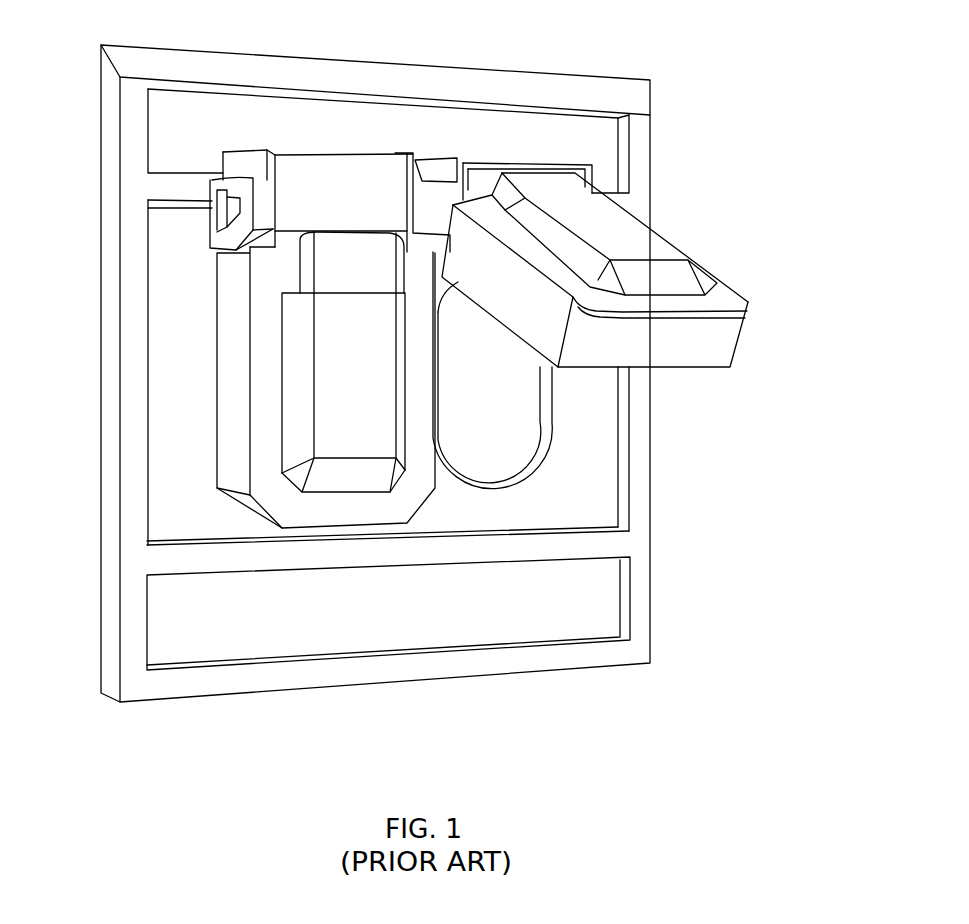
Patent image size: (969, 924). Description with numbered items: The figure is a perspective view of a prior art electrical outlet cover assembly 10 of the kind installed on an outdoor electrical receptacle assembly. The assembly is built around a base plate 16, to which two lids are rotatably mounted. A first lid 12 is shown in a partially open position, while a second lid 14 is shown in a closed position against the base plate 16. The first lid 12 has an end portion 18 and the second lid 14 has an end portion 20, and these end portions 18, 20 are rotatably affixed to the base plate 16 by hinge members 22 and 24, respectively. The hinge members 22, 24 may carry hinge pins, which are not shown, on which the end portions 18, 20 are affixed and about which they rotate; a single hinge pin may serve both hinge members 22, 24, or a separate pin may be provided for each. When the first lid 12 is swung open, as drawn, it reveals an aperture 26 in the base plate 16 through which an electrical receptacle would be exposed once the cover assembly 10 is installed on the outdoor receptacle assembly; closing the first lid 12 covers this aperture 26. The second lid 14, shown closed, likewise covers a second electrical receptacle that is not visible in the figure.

The electrical outlet cover assembly 10 is at (654, 72).
The first lid 12 is at (722, 340).
The second lid 14 is at (267, 467).
The base plate 16 is at (640, 603).
The end portion 18 is at (483, 185).
The end portion 20 is at (300, 182).
The hinge member 22 is at (425, 190).
The hinge member 24 is at (256, 185).
The aperture 26 is at (528, 411).